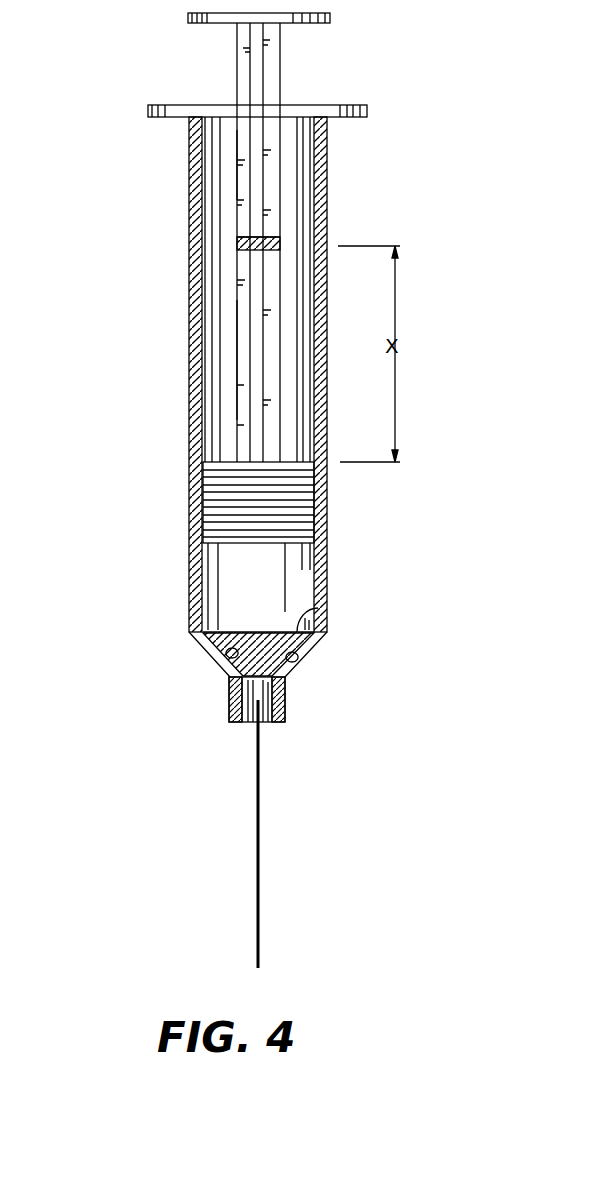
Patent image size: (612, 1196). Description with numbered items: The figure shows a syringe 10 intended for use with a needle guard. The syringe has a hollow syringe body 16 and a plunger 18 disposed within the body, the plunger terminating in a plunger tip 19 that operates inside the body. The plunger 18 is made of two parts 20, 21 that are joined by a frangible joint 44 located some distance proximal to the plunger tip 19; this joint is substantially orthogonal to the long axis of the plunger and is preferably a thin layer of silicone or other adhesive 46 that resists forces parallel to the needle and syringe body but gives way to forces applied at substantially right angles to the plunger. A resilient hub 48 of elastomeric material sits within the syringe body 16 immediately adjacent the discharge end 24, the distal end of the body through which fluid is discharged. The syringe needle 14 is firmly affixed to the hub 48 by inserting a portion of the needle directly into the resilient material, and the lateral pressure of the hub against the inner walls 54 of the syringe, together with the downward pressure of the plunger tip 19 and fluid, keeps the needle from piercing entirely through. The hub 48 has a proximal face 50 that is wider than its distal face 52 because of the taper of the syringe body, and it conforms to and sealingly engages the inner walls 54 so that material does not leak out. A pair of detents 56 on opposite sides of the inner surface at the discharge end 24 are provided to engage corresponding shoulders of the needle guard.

The syringe 10 is at (150, 296).
The syringe needle 14 is at (258, 833).
The syringe body 16 is at (191, 207).
The plunger 18 is at (283, 167).
The plunger tip 19 is at (203, 492).
The plunger part 20 is at (237, 165).
The plunger part 21 is at (237, 357).
The discharge end 24 is at (228, 729).
The frangible joint 44 is at (237, 247).
The adhesive 46 is at (278, 238).
The resilient hub 48 is at (318, 608).
The proximal face 50 is at (210, 630).
The distal face 52 is at (280, 694).
The inner walls 54 is at (313, 589).
The detents 56 is at (235, 653).